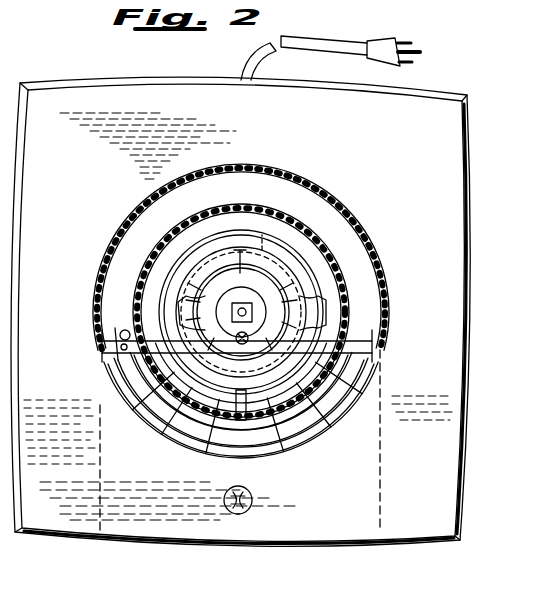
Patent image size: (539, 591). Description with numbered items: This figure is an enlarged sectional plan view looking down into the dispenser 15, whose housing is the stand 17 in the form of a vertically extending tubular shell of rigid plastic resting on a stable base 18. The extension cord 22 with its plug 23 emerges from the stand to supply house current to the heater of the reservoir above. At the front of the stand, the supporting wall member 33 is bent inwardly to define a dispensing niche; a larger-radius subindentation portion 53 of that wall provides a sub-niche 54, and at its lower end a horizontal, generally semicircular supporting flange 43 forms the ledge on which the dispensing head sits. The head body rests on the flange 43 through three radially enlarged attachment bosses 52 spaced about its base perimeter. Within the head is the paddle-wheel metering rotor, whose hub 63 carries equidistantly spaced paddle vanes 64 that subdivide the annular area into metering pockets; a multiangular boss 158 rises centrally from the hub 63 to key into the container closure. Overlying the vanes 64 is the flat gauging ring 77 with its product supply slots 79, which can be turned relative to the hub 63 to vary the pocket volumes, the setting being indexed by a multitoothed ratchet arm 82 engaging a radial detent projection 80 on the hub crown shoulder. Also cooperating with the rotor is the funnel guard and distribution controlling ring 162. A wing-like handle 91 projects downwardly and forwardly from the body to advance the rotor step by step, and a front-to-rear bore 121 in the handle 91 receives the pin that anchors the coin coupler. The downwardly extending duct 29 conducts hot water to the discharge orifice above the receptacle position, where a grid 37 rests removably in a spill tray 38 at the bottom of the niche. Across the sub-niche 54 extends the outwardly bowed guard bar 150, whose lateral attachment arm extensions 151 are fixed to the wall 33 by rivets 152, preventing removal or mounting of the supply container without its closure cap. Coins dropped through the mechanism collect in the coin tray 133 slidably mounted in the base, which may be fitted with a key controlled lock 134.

The dispenser 15 is at (58, 80).
The stand 17 is at (118, 232).
The base 18 is at (115, 105).
The extension cord 22 is at (290, 50).
The plug 23 is at (388, 40).
The duct 29 is at (124, 329).
The supporting wall member 33 is at (378, 351).
The grid 37 is at (327, 411).
The spill tray 38 is at (377, 373).
The supporting flange 43 is at (330, 303).
The attachment bosses 52 is at (250, 206).
The subindentation portion 53 is at (303, 230).
The sub-niche 54 is at (292, 240).
The hub 63 is at (227, 297).
The paddle vanes 64 is at (280, 218).
The ring 77 is at (297, 312).
The product supply slot 79 is at (168, 440).
The detent projection 80 is at (190, 300).
The ratchet arm 82 is at (166, 396).
The handle 91 is at (274, 440).
The bore 121 is at (200, 440).
The coin tray 133 is at (142, 545).
The key controlled lock 134 is at (254, 503).
The guard bar 150 is at (328, 435).
The attachment arm extensions 151 is at (373, 393).
The rivets 152 is at (395, 342).
The boss 158 is at (236, 304).
The ring 162 is at (147, 443).